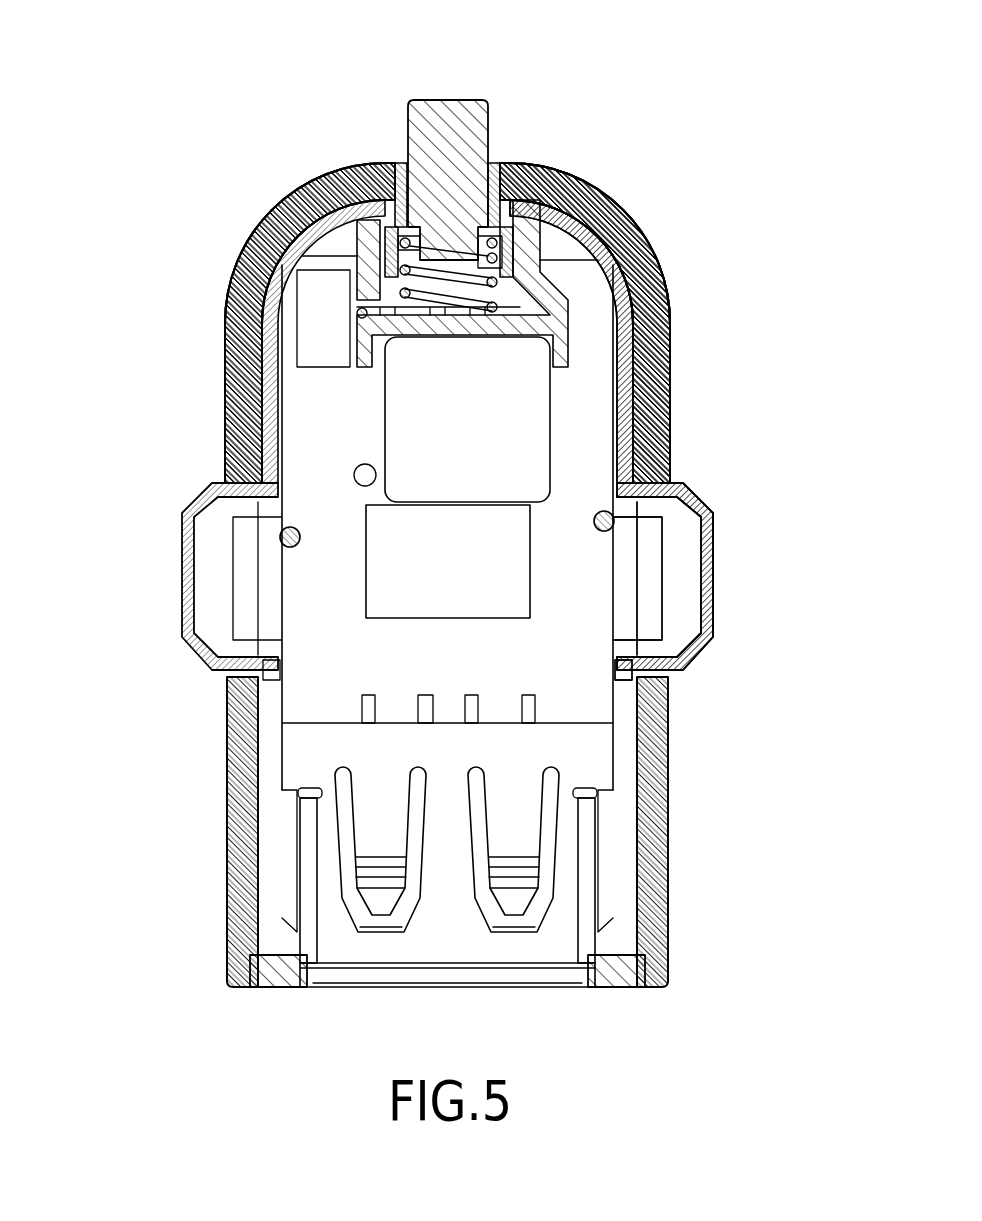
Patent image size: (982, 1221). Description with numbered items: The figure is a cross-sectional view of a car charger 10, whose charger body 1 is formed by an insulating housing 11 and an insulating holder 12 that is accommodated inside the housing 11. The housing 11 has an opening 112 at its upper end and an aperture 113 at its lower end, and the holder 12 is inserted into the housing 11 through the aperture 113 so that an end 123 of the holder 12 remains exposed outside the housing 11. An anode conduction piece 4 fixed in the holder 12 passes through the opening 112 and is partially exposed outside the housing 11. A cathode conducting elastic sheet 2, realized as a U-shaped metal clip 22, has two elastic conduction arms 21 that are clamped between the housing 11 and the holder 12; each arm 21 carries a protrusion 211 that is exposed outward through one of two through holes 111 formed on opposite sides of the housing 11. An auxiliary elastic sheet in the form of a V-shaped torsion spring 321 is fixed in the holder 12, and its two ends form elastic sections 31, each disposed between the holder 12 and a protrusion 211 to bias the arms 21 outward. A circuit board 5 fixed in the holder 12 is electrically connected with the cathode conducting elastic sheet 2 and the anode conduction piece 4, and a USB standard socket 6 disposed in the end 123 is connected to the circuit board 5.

The car charger 10 is at (461, 31).
The charger body 1 is at (162, 172).
The housing 11 is at (292, 205).
The holder 12 is at (313, 240).
The cathode conducting elastic sheet 2 is at (640, 392).
The elastic conduction arm 21 is at (262, 427).
The U-shaped metal clip 22 is at (557, 210).
The torsion spring 321 is at (637, 463).
The protrusion 211 is at (182, 577).
The through hole 111 is at (712, 640).
The elastic section 31 is at (280, 542).
The anode conduction piece 4 is at (466, 115).
The opening 112 is at (473, 157).
The circuit board 5 is at (587, 700).
The socket 6 is at (573, 837).
The end 123 is at (283, 987).
The aperture 113 is at (615, 990).